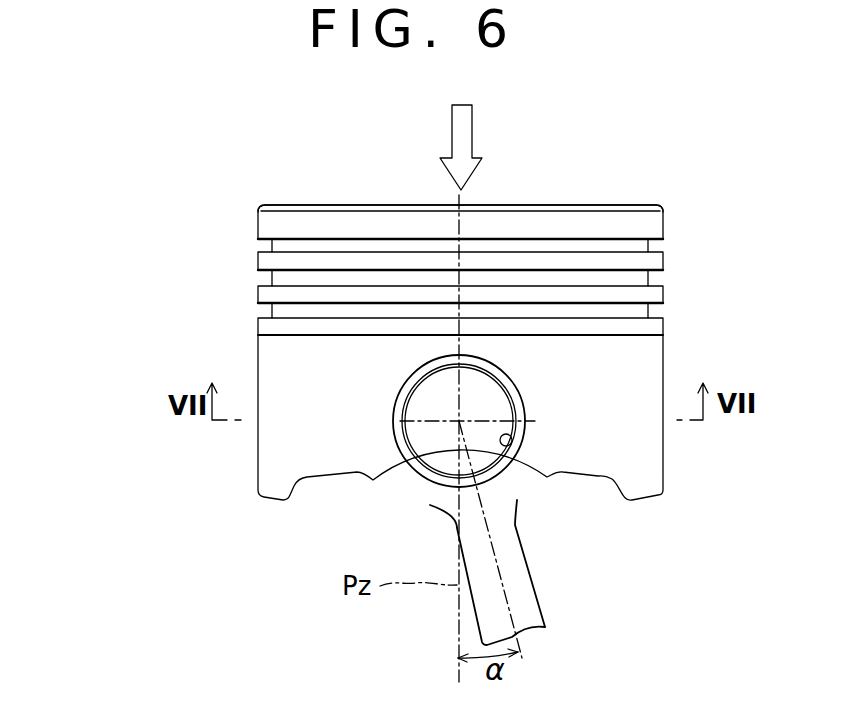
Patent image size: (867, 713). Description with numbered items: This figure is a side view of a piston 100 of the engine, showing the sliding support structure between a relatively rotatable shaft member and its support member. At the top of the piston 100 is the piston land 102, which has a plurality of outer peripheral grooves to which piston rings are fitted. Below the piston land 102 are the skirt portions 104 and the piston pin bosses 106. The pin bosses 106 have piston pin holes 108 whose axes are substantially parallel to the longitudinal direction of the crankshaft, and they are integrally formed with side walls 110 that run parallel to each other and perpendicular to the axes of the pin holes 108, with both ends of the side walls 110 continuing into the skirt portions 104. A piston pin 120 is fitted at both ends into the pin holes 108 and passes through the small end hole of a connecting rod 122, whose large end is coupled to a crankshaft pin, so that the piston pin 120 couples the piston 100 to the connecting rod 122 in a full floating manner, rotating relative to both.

The piston 100 is at (373, 150).
The piston land 102 is at (238, 208).
The skirt portions 104 is at (258, 362).
The piston pin bosses 106 is at (398, 452).
The piston pin holes 108 is at (520, 453).
The side walls 110 is at (329, 371).
The piston pin 120 is at (413, 412).
The connecting rod 122 is at (512, 560).